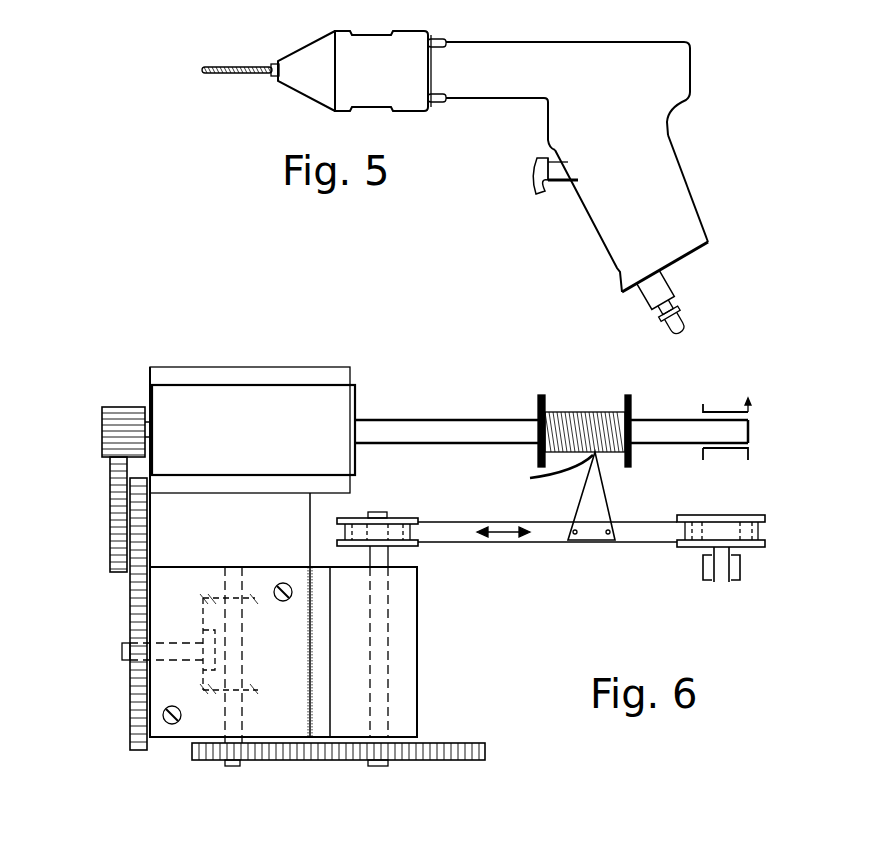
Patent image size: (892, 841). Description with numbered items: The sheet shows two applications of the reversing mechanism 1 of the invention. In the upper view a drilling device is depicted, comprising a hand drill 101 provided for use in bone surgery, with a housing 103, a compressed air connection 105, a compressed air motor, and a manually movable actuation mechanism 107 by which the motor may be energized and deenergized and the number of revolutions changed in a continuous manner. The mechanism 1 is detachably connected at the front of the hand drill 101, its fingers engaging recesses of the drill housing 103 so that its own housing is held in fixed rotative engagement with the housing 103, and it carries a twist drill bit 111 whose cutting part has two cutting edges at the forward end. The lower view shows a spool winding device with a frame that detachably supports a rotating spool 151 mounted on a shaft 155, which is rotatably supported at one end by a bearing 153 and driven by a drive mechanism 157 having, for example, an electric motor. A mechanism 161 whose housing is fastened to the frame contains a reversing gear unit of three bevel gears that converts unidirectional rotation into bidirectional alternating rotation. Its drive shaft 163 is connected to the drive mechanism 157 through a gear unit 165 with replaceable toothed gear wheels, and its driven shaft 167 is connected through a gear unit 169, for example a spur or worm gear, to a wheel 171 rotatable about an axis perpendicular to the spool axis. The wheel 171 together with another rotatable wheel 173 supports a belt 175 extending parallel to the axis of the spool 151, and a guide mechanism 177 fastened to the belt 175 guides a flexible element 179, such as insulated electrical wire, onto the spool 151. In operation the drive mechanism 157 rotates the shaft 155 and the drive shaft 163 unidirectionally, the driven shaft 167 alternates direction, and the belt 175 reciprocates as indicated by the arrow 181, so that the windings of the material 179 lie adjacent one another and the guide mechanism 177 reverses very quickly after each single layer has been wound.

In FIG. 5, the mechanism 1 is at (416, 30).
In FIG. 5, the hand drill 101 is at (676, 116).
In FIG. 5, the housing 103 is at (697, 212).
In FIG. 5, the compressed air connection 105 is at (672, 312).
In FIG. 5, the actuation mechanism 107 is at (562, 184).
In FIG. 5, the twist drill bit 111 is at (222, 66).
In FIG. 6, the spool 151 is at (633, 396).
In FIG. 6, the bearing 153 is at (725, 411).
In FIG. 6, the shaft 155 is at (429, 418).
In FIG. 6, the drive mechanism 157 is at (240, 372).
In FIG. 6, the mechanism 161 is at (163, 727).
In FIG. 6, the drive shaft 163 is at (123, 653).
In FIG. 6, the gear unit 165 is at (118, 574).
In FIG. 6, the driven shaft 167 is at (234, 767).
In FIG. 6, the gear unit 169 is at (340, 764).
In FIG. 6, the wheel 171 is at (402, 516).
In FIG. 6, the rotatable wheel 173 is at (722, 516).
In FIG. 6, the belt 175 is at (483, 546).
In FIG. 6, the guide mechanism 177 is at (603, 506).
In FIG. 6, the flexible element 179 is at (566, 481).
In FIG. 6, the arrow 181 is at (500, 522).